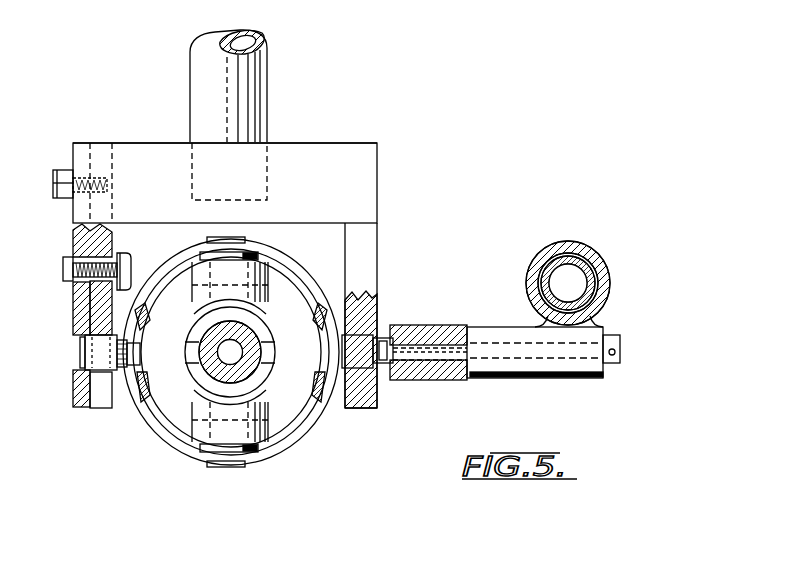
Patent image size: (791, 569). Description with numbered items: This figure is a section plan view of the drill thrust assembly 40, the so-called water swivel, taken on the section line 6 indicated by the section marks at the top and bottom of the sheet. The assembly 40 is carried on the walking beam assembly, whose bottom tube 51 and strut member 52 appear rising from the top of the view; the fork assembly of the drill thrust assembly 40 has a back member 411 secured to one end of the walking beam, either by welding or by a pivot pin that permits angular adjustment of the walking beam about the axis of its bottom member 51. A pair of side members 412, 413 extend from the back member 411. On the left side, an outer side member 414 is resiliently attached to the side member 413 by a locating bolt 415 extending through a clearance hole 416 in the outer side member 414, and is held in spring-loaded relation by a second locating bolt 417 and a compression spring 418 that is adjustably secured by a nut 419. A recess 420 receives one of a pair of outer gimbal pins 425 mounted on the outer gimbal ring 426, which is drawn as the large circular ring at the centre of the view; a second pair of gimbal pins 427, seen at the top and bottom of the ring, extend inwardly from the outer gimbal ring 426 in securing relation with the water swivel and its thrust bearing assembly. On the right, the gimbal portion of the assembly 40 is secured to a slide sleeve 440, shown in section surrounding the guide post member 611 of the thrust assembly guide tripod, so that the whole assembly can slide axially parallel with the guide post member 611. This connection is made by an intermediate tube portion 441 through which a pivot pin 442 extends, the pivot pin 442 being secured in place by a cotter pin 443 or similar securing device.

The section line 6- 6 is at (242, 12).
The drill thrust assembly 40 is at (395, 115).
The bottom tube 51 is at (265, 125).
The strut member 52 is at (263, 78).
The back member 411 is at (367, 167).
The side member 412 is at (370, 238).
The side member 413 is at (100, 410).
The outer side member 414 is at (78, 393).
The locating bolt 415 is at (53, 173).
The clearance hole 416 is at (72, 157).
The second locating bolt 417 is at (63, 267).
The compression spring 418 is at (80, 245).
The nut 419 is at (119, 266).
The recess 420 is at (78, 360).
The outer gimbal pin 425 is at (83, 347).
The outer gimbal ring 426 is at (312, 430).
The gimbal pin 427 is at (243, 238).
The slide sleeve 440 is at (612, 290).
The intermediate tube portion 441 is at (488, 327).
The pivot pin 442 is at (425, 357).
The cotter pin 443 is at (617, 365).
The guide post member 611 is at (592, 265).